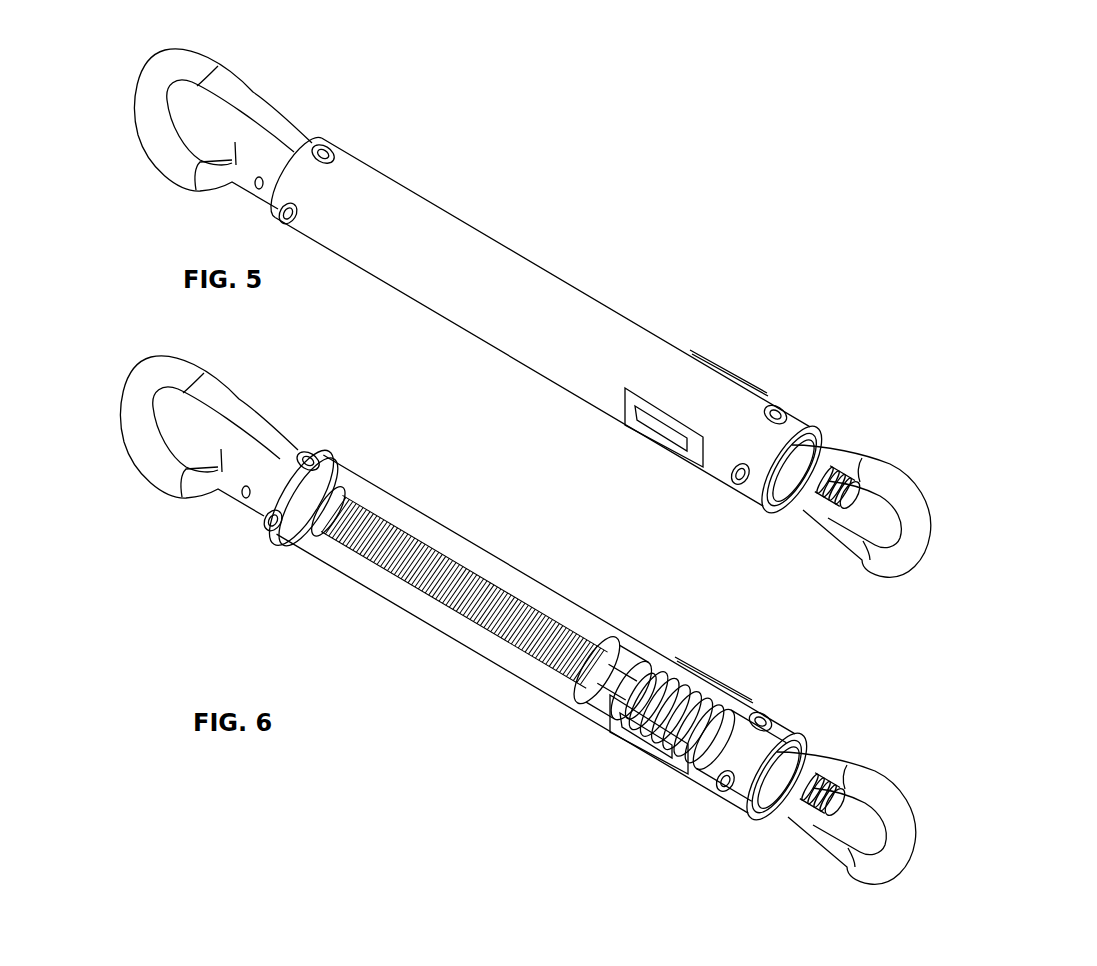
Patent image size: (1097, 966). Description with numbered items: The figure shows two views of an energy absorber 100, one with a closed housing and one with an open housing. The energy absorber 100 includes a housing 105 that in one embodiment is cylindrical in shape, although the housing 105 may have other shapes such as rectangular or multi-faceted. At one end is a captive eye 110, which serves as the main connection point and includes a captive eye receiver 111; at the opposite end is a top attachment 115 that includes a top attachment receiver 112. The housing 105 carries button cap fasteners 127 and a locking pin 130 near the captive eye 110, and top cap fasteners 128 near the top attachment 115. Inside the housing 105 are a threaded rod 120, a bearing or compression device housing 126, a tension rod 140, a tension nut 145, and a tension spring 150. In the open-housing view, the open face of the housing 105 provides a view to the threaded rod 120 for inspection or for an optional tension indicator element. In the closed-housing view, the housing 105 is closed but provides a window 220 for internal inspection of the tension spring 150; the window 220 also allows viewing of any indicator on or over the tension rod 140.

In FIG. 5, the energy absorber 100 is at (685, 85).
In FIG. 6, the energy absorber 100 is at (502, 525).
In FIG. 5, the housing 105 is at (533, 260).
In FIG. 6, the housing 105 is at (557, 588).
In FIG. 5, the captive eye 110 is at (162, 55).
In FIG. 6, the captive eye 110 is at (133, 373).
In FIG. 5, the captive eye receiver 111 is at (245, 160).
In FIG. 6, the captive eye receiver 111 is at (237, 472).
In FIG. 5, the top attachment receiver 112 is at (802, 478).
In FIG. 6, the top attachment receiver 112 is at (783, 780).
In FIG. 5, the top attachment 115 is at (895, 467).
In FIG. 6, the top attachment 115 is at (893, 790).
In FIG. 6, the threaded rod 120 is at (407, 540).
In FIG. 6, the bearing housing 126 is at (742, 727).
In FIG. 5, the button cap fasteners 127 is at (327, 150).
In FIG. 6, the button cap fasteners 127 is at (320, 457).
In FIG. 5, the top cap fasteners 128 is at (780, 408).
In FIG. 6, the top cap fasteners 128 is at (767, 717).
In FIG. 5, the locking pin 130 is at (260, 177).
In FIG. 6, the locking pin 130 is at (243, 483).
In FIG. 6, the tension rod 140 is at (830, 787).
In FIG. 6, the tension nut 145 is at (627, 653).
In FIG. 6, the tension spring 150 is at (688, 692).
In FIG. 5, the window 220 is at (650, 435).
In FIG. 6, the window 220 is at (637, 738).